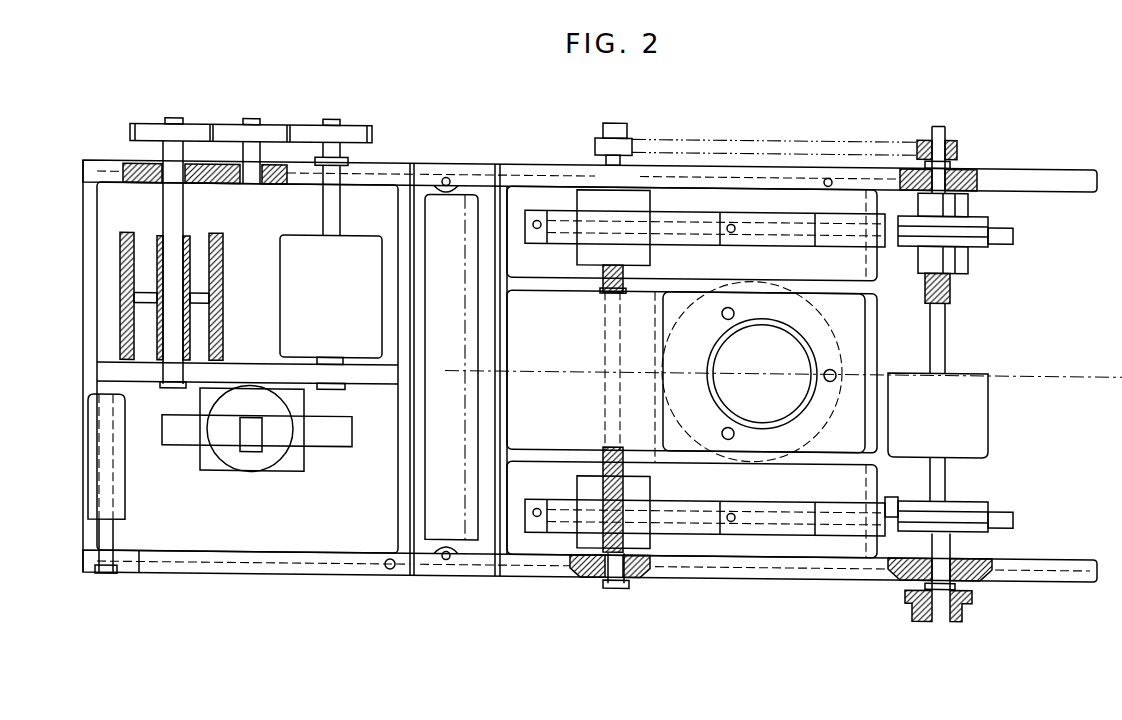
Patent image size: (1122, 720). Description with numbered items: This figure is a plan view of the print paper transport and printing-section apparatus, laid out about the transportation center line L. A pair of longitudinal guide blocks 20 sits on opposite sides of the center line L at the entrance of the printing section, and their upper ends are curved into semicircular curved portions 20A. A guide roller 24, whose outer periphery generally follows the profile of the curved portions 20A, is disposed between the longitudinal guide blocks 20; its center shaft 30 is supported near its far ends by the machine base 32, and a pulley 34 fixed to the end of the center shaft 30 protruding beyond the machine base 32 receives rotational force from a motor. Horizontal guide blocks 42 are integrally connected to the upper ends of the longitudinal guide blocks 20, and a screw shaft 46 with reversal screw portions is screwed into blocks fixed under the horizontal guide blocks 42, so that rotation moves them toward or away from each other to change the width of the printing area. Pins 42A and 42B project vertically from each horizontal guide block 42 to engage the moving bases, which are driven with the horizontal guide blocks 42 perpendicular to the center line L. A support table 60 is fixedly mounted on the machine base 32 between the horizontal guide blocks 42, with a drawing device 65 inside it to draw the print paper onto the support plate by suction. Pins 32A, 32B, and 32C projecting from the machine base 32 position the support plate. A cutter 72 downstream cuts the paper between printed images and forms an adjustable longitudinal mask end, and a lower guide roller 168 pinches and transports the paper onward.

The longitudinal guide block 20 is at (1010, 236).
The curved portion 20A is at (956, 238).
The guide roller 24 is at (990, 439).
The center shaft 30 is at (949, 483).
The machine base 32 is at (1034, 170).
The pin 32A is at (830, 184).
The pin 32B is at (448, 180).
The pin 32C is at (446, 561).
The pulley 34 is at (972, 596).
The horizontal guide block 42 is at (783, 246).
The pin 42A is at (539, 221).
The pin 42B is at (733, 223).
The screw shaft 46 is at (605, 365).
The support table 60 is at (877, 343).
The drawing device 65 is at (814, 430).
The cutter 72 is at (421, 467).
The lower guide roller 168 is at (220, 245).
The transportation center line L is at (1080, 372).